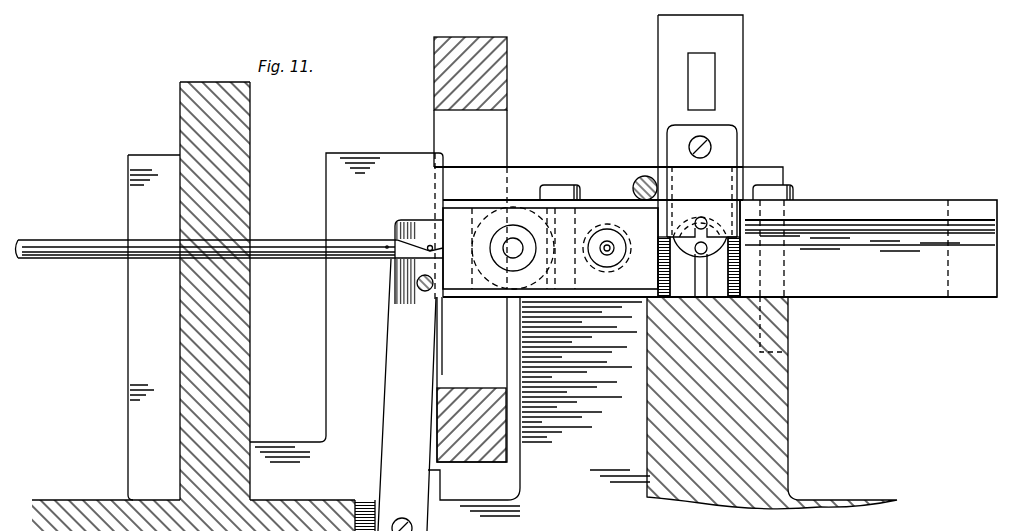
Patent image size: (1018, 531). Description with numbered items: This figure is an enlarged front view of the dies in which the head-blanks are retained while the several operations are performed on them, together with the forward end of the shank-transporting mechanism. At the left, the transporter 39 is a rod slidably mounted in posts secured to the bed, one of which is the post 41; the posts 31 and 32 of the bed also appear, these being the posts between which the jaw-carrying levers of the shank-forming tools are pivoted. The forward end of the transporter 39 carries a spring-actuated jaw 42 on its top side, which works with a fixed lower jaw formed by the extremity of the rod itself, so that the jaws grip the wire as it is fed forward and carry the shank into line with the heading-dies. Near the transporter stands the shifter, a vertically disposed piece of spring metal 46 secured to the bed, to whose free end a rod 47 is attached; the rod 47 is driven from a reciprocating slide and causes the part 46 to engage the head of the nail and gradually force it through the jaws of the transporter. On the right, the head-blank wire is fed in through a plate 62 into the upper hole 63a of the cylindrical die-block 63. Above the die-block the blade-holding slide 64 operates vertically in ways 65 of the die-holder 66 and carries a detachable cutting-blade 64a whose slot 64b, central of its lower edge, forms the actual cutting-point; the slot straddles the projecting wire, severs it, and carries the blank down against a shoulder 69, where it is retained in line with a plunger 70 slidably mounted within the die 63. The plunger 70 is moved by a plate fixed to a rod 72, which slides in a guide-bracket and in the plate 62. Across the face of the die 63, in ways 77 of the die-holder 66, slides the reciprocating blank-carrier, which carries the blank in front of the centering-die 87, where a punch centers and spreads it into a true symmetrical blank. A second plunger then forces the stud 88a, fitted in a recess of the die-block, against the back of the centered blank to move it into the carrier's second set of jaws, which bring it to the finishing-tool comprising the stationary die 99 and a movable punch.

The post 31 is at (346, 297).
The post 32 is at (154, 327).
The transporter 39 is at (281, 240).
The post 41 is at (248, 382).
The spring-actuated jaw 42 is at (393, 235).
The piece of spring metal 46 is at (407, 395).
The rod 47 is at (424, 292).
The plate 62 is at (773, 185).
The cylindrical die-block 63 is at (736, 256).
The upper hole 63a is at (704, 217).
The upright arm 64 is at (735, 106).
The cutting-blade 64a is at (672, 146).
The slot 64b is at (698, 217).
The ways 65 is at (745, 285).
The die-holder 66 is at (868, 248).
The shoulder 69 is at (698, 253).
The plunger 70 is at (704, 253).
The rod 72 is at (636, 186).
The ways 77 is at (971, 246).
The centering-die 87 is at (609, 246).
The stud 88a is at (605, 255).
The stationary die 99 is at (512, 249).